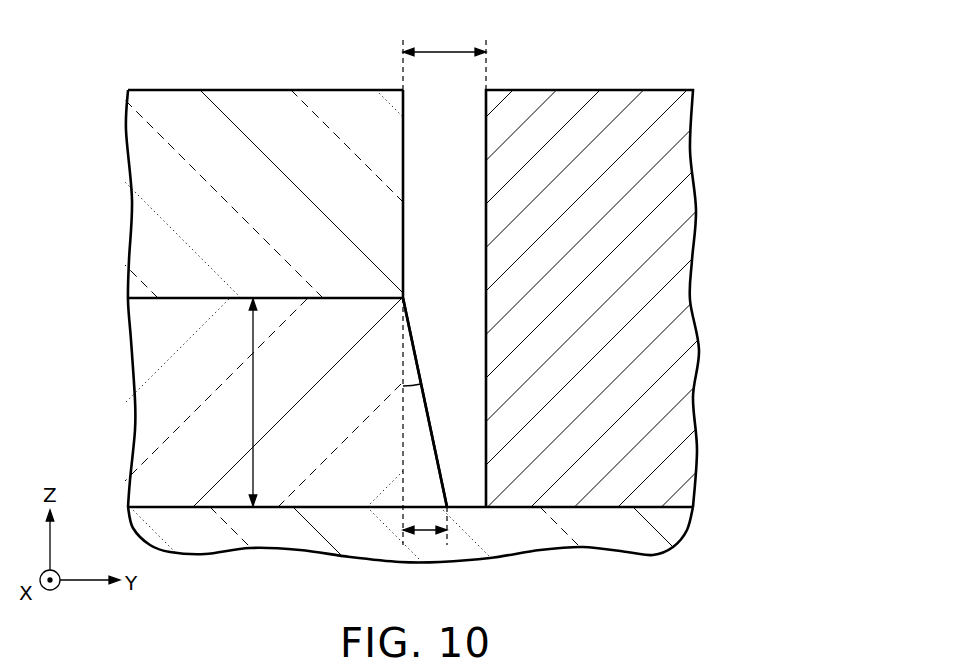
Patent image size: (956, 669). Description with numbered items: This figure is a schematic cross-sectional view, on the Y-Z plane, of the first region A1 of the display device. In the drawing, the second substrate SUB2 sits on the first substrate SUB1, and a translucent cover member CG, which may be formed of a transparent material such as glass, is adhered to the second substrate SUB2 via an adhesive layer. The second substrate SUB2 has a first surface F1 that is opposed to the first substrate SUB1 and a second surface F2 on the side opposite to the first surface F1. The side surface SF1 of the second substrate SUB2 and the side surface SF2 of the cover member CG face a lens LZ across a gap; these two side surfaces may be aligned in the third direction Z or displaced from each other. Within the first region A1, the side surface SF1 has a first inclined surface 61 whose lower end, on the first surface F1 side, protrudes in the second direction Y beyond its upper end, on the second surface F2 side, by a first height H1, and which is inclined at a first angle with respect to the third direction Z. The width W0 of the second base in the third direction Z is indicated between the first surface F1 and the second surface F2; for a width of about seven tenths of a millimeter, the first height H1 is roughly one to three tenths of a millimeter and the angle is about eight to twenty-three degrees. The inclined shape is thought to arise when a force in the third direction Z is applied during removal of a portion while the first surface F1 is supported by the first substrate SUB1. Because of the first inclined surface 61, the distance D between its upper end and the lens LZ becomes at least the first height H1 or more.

The cover member CG is at (140, 208).
The second substrate SUB2 is at (130, 365).
The first substrate SUB1 is at (673, 527).
The lens LZ is at (690, 305).
The first region A1 is at (326, 81).
The side surface of the second substrate SF1 is at (446, 292).
The side surface of the cover member SF2 is at (414, 172).
The first inclined surface 61 is at (434, 440).
The distance D is at (444, 58).
The width W0 is at (234, 402).
The first height H1 is at (425, 430).
The first surface F1 is at (190, 518).
The second surface F2 is at (187, 288).